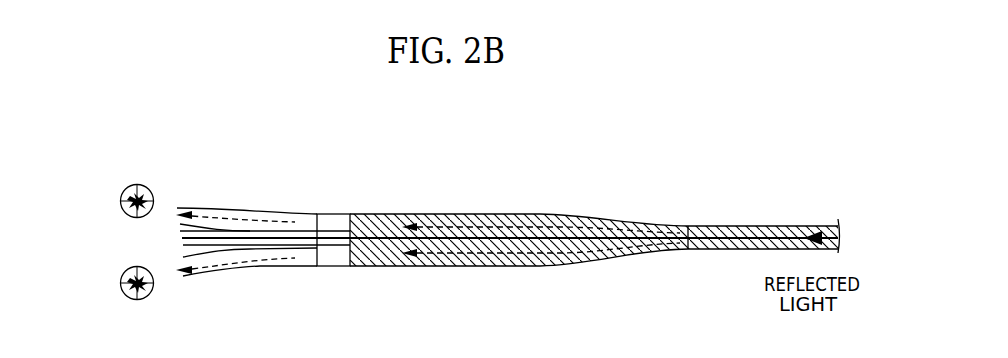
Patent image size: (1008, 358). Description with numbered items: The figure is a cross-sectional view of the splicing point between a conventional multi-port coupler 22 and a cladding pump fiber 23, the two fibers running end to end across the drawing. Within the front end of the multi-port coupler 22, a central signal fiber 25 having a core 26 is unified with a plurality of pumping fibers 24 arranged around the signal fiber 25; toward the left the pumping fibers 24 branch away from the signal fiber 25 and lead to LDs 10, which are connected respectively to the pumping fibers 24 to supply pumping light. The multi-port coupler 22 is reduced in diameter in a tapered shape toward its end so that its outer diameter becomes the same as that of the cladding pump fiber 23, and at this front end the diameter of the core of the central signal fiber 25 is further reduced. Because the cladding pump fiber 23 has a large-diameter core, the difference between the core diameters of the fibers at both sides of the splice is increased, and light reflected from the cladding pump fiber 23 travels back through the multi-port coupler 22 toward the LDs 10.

The LD 10 is at (123, 189).
The multi-port coupler 22 is at (685, 160).
The cladding pump fiber 23 is at (837, 159).
The pumping fiber 24 is at (223, 208).
The signal fiber 25 is at (278, 246).
The core 26 is at (334, 240).